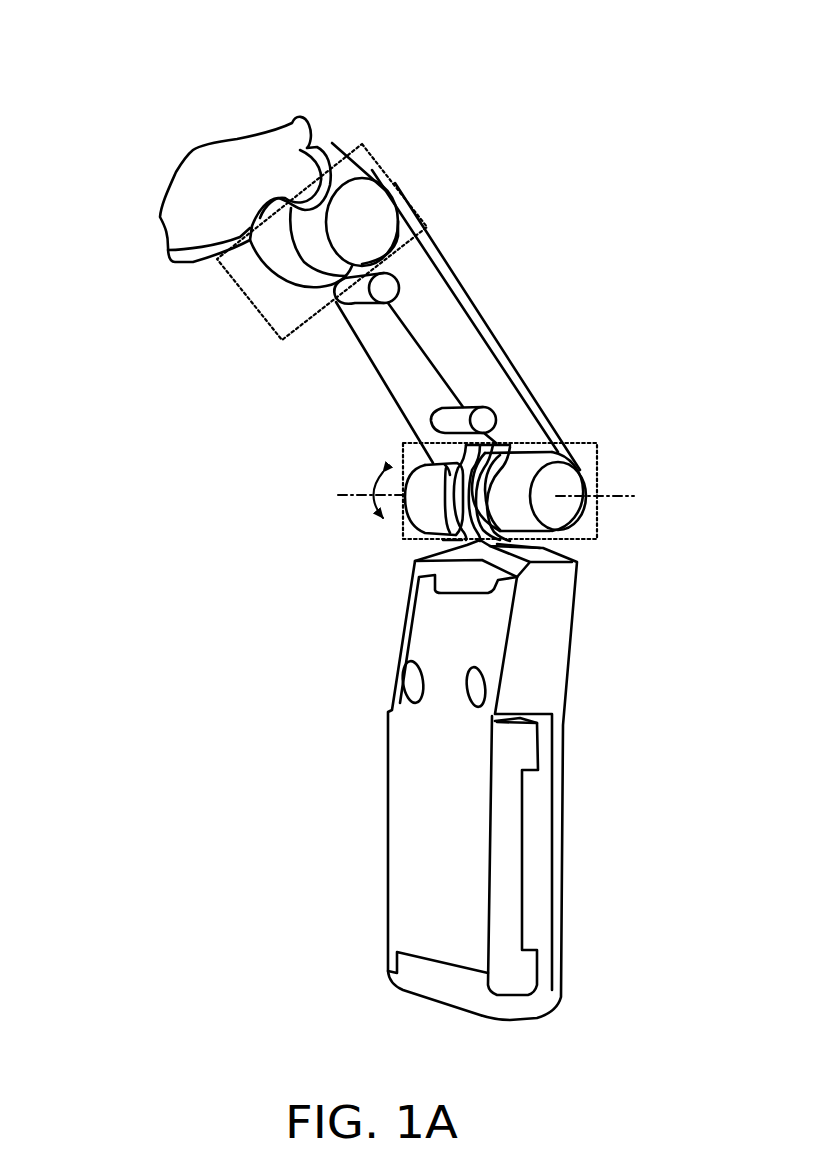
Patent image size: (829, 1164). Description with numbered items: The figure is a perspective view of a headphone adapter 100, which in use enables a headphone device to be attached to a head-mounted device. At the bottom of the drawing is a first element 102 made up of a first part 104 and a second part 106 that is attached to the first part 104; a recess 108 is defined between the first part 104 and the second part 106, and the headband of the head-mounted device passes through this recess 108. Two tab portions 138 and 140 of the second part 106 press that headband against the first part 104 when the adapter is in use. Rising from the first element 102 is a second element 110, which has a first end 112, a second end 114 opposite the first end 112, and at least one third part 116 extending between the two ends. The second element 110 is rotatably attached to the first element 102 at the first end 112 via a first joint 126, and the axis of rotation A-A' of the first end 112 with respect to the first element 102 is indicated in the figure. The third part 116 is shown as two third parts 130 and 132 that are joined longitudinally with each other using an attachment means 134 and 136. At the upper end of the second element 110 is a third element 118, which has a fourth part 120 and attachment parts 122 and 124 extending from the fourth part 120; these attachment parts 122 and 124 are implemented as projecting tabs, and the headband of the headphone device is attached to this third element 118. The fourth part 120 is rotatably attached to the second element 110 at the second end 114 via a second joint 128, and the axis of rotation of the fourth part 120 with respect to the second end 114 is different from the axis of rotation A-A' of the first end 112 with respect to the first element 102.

The headphone adapter 100 is at (662, 70).
The first element 102 is at (599, 563).
The first part 104 is at (558, 648).
The second part 106 is at (403, 807).
The recess 108 is at (537, 846).
The second element 110 is at (485, 266).
The first end 112 is at (462, 535).
The second end 114 is at (368, 180).
The third part 116 is at (499, 326).
The third element 118 is at (167, 132).
The fourth part 120 is at (239, 153).
The attachment part 122 is at (163, 202).
The attachment part 124 is at (313, 158).
The first joint 126 is at (583, 443).
The second joint 128 is at (255, 305).
The third part 130 is at (507, 386).
The third part 132 is at (401, 368).
The attachment means 134 is at (399, 279).
The attachment means 136 is at (433, 424).
The tab portion 138 is at (513, 747).
The tab portion 140 is at (513, 974).